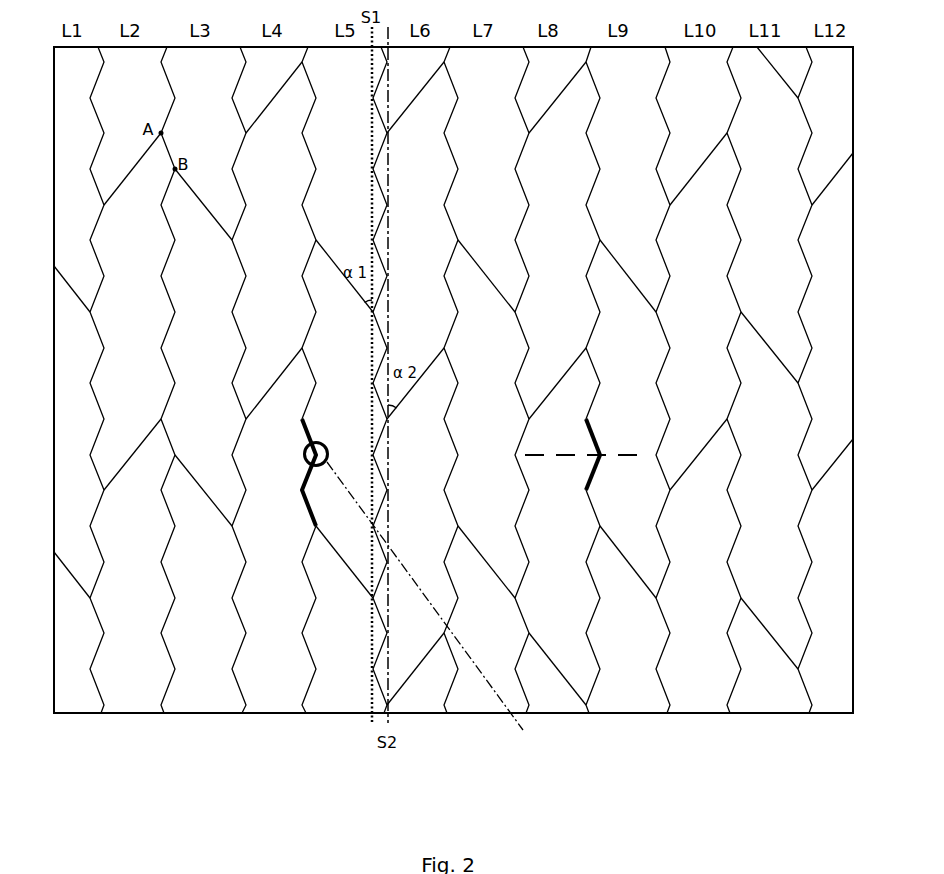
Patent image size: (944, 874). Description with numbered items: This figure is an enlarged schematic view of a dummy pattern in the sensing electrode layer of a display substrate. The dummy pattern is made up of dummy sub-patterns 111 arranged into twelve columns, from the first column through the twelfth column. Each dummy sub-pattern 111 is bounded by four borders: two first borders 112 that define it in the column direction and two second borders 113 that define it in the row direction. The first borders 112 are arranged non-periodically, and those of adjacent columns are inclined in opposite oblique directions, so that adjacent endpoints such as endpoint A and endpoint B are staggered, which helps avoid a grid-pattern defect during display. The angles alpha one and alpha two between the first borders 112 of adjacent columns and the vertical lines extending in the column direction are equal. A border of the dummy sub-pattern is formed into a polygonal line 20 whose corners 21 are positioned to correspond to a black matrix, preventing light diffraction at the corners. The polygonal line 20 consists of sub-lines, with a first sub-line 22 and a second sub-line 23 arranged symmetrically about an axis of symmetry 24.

The dummy sub-pattern 111 is at (208, 660).
The first border 112 is at (354, 575).
The second border 113 is at (373, 669).
The polygonal line 20 is at (302, 432).
The corner 21 is at (433, 612).
The first sub-line 22 is at (584, 447).
The second sub-line 23 is at (590, 456).
The axis of symmetry 24 is at (636, 456).